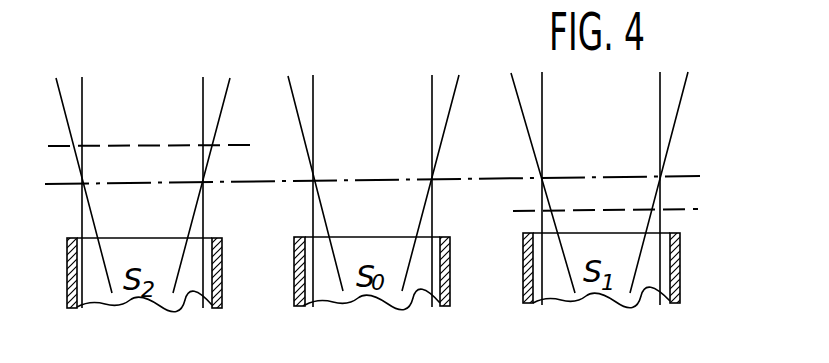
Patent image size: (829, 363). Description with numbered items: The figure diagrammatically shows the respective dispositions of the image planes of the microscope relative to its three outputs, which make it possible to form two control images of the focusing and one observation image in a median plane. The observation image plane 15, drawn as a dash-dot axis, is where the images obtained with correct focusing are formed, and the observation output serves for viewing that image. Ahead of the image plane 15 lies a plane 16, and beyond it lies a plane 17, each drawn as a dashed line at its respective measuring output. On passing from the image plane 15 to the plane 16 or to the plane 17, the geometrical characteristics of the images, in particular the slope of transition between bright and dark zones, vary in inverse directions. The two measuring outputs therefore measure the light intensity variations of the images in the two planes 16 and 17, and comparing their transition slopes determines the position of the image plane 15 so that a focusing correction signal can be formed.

The image observation plane 15 is at (377, 178).
The plane in front of the image plane 16 is at (598, 207).
The plane beyond the image plane 17 is at (137, 145).